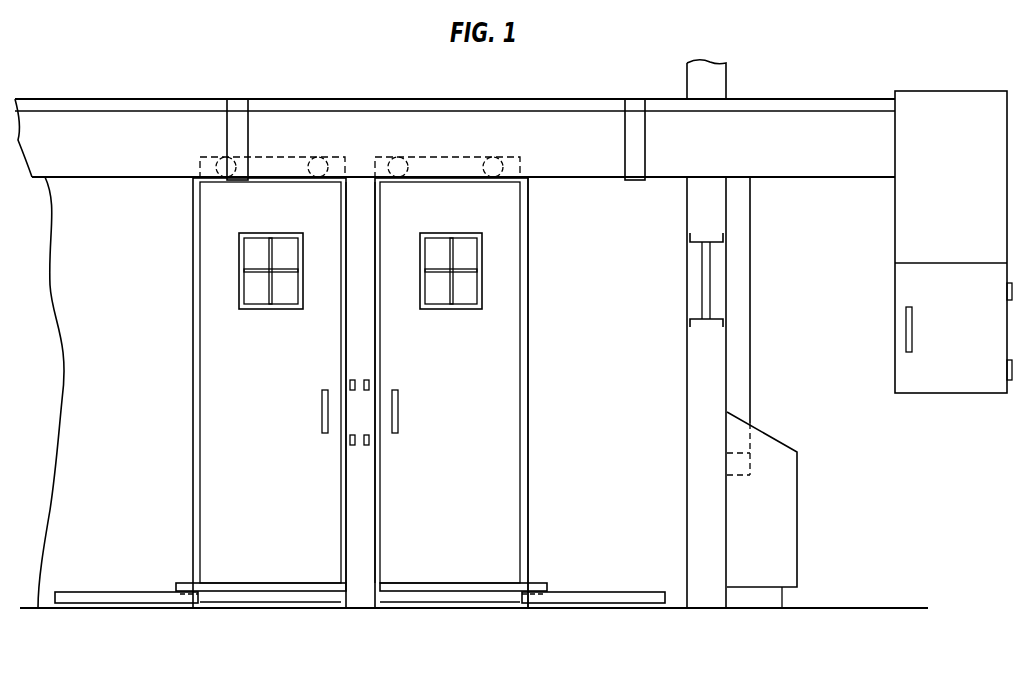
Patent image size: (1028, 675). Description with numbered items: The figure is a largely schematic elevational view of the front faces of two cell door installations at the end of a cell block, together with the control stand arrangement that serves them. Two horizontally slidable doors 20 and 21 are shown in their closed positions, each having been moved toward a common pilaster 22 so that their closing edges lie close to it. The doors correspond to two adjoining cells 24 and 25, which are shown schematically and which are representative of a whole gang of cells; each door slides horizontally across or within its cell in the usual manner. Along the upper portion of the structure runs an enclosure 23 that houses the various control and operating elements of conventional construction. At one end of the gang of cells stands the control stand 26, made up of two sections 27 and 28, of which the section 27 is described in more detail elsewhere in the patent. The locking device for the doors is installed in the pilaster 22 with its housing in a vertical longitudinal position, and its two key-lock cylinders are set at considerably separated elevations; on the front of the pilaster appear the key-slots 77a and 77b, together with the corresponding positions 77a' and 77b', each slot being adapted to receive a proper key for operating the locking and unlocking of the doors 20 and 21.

The horizontally slidable door 20 is at (461, 382).
The horizontally slidable door 21 is at (261, 382).
The pilaster 22 is at (368, 363).
The enclosure 23 is at (530, 97).
The cell 24 is at (607, 392).
The cell 25 is at (79, 392).
The control stand 26 is at (919, 398).
The control stand section 27 is at (895, 322).
The control stand section 28 is at (790, 446).
The key-slot 77a is at (393, 443).
The lower door contact 77a' is at (326, 446).
The key-slot 77b is at (392, 380).
The upper door contact 77b' is at (326, 380).